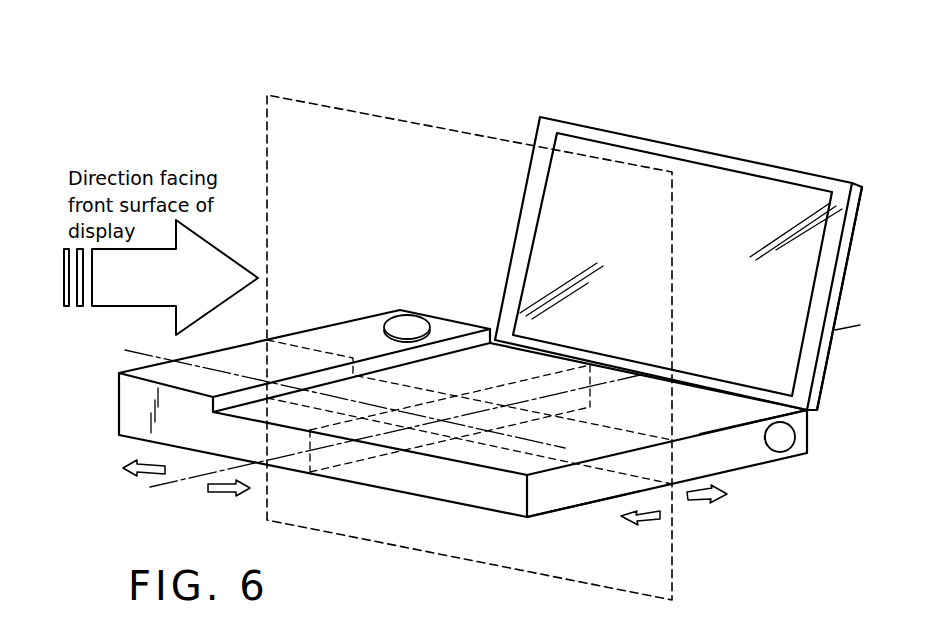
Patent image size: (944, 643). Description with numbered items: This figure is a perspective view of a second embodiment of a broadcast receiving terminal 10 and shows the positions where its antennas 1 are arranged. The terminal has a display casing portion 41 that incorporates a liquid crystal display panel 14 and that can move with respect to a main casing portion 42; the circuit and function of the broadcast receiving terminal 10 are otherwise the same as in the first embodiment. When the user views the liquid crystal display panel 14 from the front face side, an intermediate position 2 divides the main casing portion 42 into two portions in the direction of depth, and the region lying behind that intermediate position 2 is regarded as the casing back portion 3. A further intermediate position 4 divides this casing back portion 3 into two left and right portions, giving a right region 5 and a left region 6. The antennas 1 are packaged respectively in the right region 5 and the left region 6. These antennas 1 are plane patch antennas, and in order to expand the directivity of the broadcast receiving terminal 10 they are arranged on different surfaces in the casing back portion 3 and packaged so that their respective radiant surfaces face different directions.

The antenna 1 is at (397, 322).
The intermediate position 2 is at (727, 472).
The casing back portion 3 is at (674, 507).
The intermediate position 4 is at (382, 429).
The right region 5 is at (229, 498).
The left region 6 is at (134, 464).
The broadcast receiving terminal 10 is at (358, 490).
The liquid crystal display panel 14 is at (795, 170).
The display casing portion 41 is at (823, 367).
The main casing portion 42 is at (733, 433).